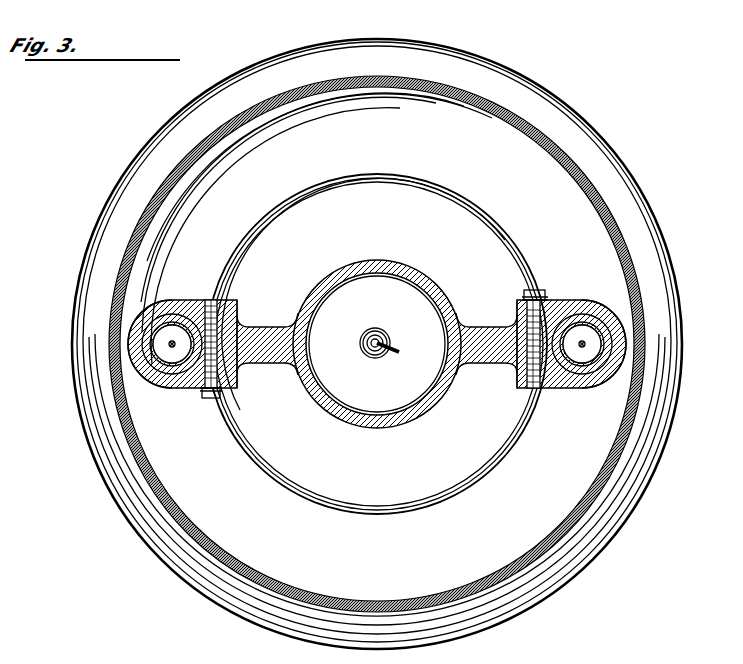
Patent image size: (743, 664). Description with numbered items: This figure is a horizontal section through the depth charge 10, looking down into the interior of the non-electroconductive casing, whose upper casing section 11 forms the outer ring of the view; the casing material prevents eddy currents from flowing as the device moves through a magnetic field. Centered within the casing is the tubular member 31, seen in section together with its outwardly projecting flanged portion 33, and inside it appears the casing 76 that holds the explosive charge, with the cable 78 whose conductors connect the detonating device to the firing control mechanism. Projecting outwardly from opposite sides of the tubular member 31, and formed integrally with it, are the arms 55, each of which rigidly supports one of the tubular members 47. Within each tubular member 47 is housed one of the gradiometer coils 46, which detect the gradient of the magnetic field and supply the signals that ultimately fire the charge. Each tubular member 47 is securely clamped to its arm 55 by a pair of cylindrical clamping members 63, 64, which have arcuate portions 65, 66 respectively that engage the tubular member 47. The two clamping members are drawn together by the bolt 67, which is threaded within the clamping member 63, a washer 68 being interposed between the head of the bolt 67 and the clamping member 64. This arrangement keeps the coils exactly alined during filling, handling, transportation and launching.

The depth charge 10 is at (658, 217).
The upper casing section 11 is at (588, 190).
The tubular member 31 is at (405, 262).
The flanged portion 33 is at (488, 216).
The gradiometer coils 46 is at (178, 380).
The tubular members 47 is at (163, 300).
The arms 55 is at (276, 327).
The clamping member 63 is at (210, 300).
The clamping member 64 is at (232, 386).
The arcuate portion 65 is at (194, 317).
The arcuate portion 66 is at (176, 372).
The bolt 67 is at (220, 396).
The washer 68 is at (211, 401).
The casing 76 is at (400, 296).
The cable 78 is at (392, 347).